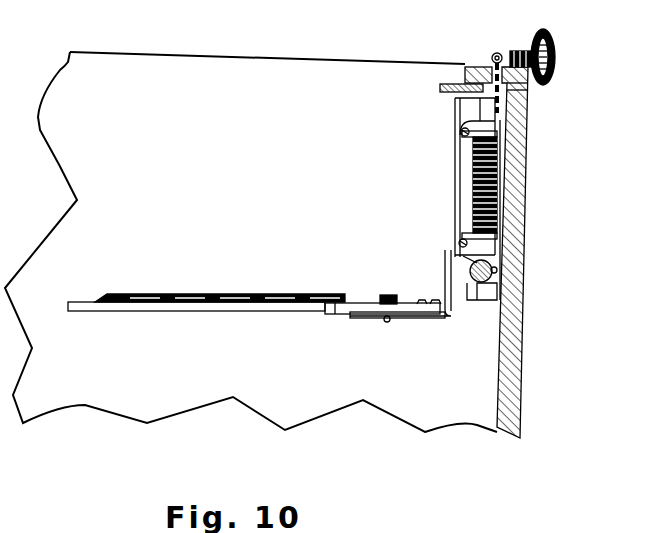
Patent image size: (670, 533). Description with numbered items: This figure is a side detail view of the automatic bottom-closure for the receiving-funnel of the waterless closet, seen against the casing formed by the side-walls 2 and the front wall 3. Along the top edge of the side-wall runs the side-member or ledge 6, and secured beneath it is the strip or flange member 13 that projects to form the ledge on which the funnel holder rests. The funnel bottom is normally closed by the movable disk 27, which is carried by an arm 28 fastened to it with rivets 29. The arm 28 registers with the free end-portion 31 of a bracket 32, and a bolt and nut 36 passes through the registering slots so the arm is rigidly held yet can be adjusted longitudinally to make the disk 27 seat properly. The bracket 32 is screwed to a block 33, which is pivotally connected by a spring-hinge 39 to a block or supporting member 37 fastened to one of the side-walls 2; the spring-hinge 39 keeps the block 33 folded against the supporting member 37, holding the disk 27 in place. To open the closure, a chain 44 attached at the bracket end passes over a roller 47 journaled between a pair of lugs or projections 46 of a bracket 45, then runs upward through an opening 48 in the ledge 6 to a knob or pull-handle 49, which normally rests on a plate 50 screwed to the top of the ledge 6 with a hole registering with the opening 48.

The side-wall 2 is at (523, 180).
The front wall 3 is at (148, 67).
The side-member or ledge 6 is at (466, 68).
The strip or flange member 13 is at (438, 87).
The movable disk 27 is at (223, 305).
The arm 28 is at (363, 303).
The rivets 29 is at (342, 303).
The free end-portion 31 is at (407, 314).
The bracket 32 is at (453, 237).
The block 33 is at (455, 157).
The bolt and nut 36 is at (389, 295).
The block or supporting member 37 is at (502, 166).
The spring-hinge 39 is at (498, 203).
The chain 44 is at (523, 117).
The bracket 45 is at (498, 276).
The lugs or projections 46 is at (469, 247).
The roller 47 is at (494, 262).
The opening 48 is at (526, 93).
The knob or pull-handle 49 is at (556, 52).
The plate 50 is at (483, 65).